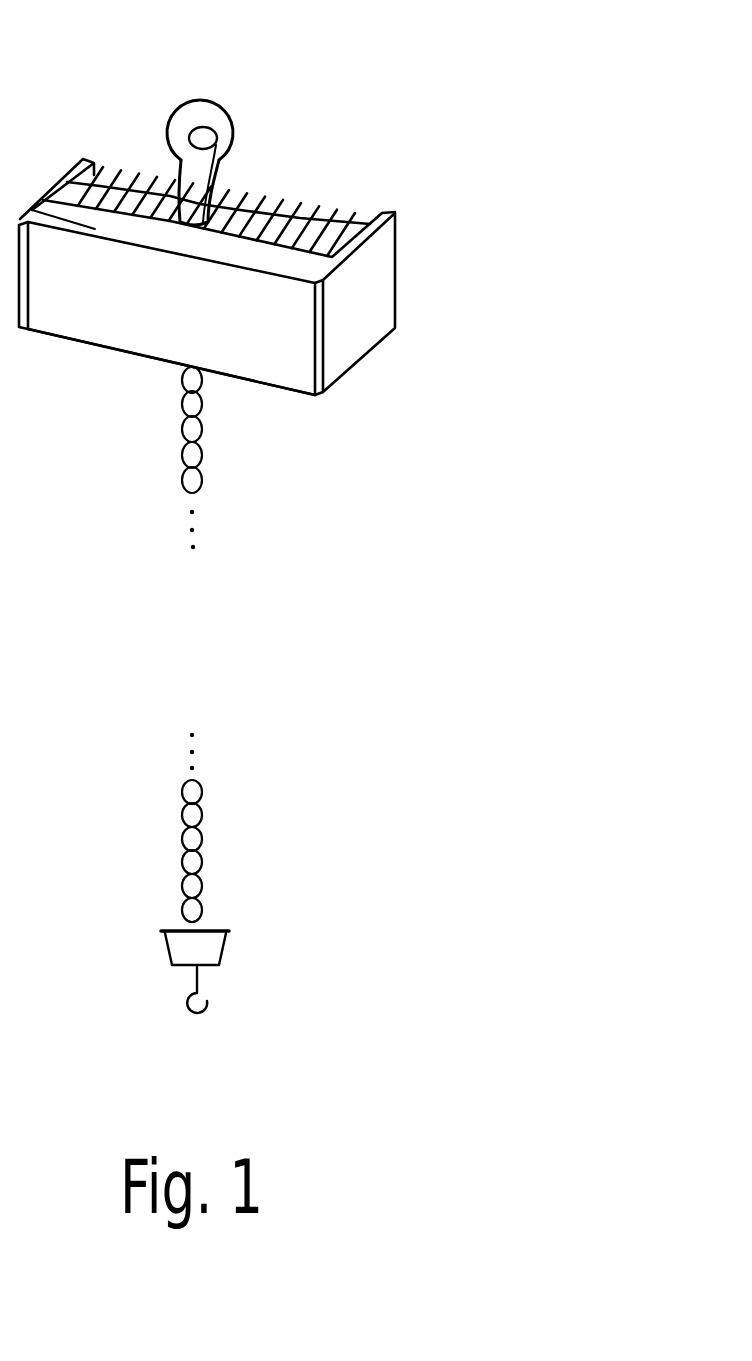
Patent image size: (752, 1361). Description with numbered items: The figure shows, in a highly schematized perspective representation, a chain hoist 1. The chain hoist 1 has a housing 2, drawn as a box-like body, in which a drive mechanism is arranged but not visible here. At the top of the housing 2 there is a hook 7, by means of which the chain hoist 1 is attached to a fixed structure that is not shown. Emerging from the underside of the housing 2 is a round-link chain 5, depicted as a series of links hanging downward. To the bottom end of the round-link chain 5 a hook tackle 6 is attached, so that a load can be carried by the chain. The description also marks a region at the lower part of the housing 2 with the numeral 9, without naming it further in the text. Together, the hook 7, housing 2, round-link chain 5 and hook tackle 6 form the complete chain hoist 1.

The chain hoist 1 is at (355, 506).
The housing 2 is at (411, 198).
The round-link chain 5 is at (202, 480).
The hook tackle 6 is at (197, 945).
The hook 7 is at (222, 110).
The housing bottom 9 is at (288, 390).